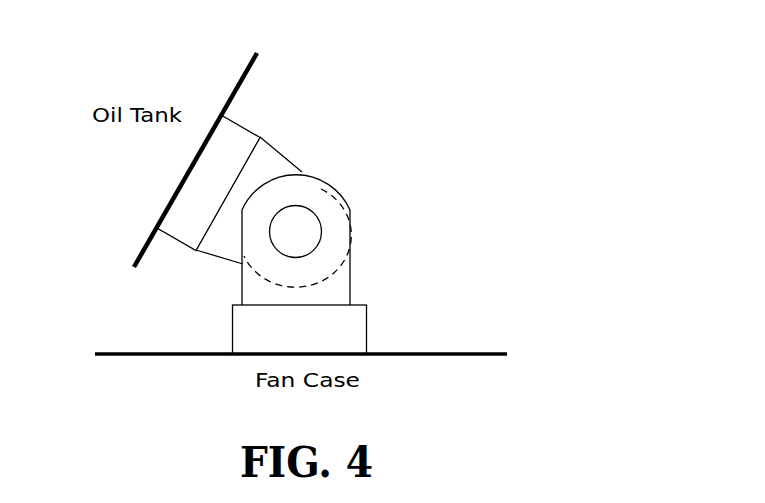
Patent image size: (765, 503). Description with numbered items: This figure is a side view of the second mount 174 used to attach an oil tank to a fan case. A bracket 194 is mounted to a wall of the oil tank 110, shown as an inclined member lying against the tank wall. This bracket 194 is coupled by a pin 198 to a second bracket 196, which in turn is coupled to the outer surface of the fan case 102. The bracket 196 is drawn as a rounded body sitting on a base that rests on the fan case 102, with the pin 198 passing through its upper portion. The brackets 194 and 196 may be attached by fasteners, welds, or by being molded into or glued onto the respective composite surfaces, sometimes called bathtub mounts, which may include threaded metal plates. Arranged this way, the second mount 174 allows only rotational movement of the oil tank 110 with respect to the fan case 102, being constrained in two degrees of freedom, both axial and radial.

The second mount 174 is at (494, 54).
The oil tank 110 is at (162, 232).
The bracket 194 is at (248, 120).
The bracket 196 is at (350, 293).
The pin 198 is at (297, 230).
The fan case 102 is at (417, 355).